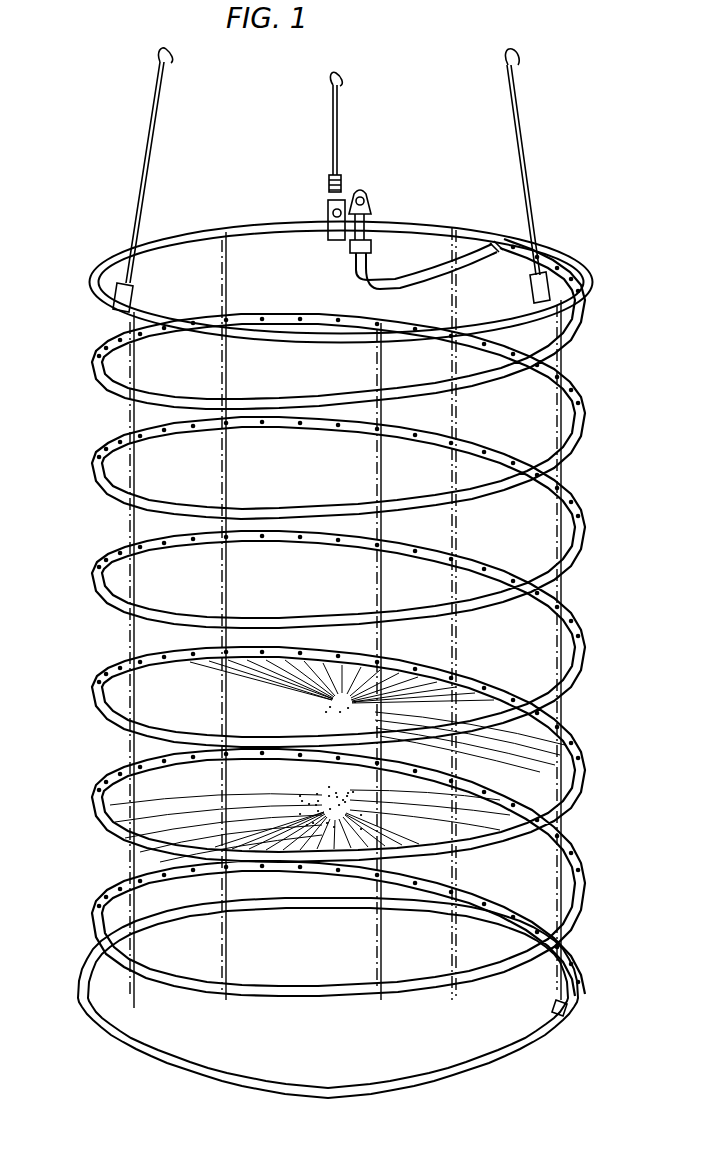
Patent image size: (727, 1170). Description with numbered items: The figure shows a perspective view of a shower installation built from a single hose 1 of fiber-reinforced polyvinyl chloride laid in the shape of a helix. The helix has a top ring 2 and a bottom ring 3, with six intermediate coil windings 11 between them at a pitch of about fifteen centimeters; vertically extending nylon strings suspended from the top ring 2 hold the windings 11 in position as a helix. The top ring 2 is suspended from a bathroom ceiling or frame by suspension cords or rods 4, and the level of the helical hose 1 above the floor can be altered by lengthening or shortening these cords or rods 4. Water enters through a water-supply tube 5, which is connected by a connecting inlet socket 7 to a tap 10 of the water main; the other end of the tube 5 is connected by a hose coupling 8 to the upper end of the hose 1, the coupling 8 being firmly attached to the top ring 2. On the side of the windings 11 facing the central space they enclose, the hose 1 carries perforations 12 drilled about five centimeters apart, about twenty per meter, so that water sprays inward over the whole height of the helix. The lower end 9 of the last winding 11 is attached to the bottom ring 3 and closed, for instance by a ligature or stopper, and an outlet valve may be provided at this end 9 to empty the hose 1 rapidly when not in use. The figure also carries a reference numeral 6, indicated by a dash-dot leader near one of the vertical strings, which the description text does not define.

The spray irrigation device 1 is at (590, 640).
The top ring 2 is at (296, 224).
The bottom ring 3 is at (462, 1091).
The hanger 4 is at (524, 172).
The supply tube 5 is at (410, 274).
The support rod 6 is at (138, 471).
The fitting 7 is at (350, 247).
The connector 8 is at (499, 240).
The clamp 9 is at (566, 1012).
The eye connector 10 is at (369, 199).
The helical perforated hose 11 is at (95, 452).
The hole 12 is at (250, 424).